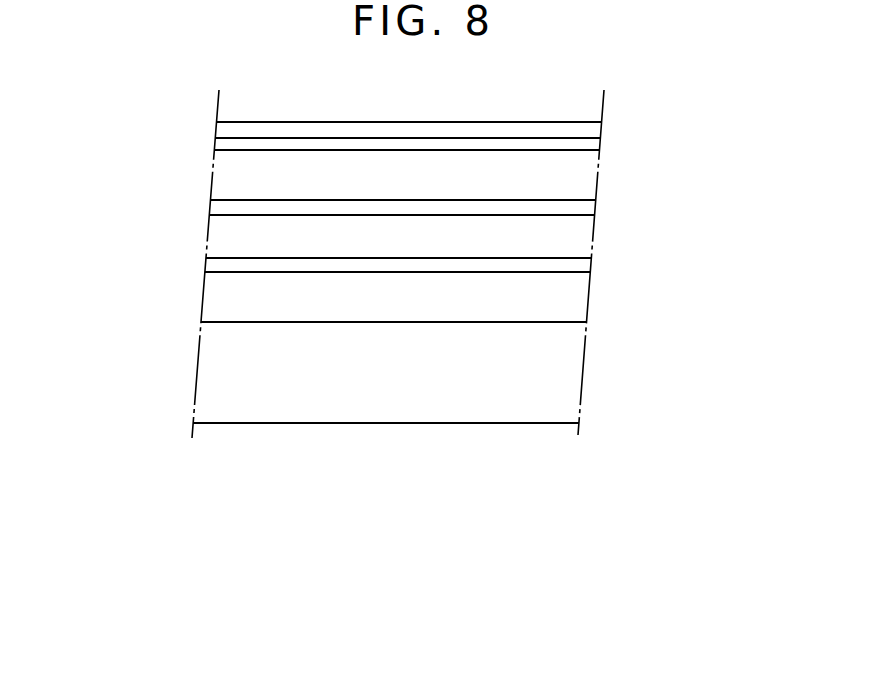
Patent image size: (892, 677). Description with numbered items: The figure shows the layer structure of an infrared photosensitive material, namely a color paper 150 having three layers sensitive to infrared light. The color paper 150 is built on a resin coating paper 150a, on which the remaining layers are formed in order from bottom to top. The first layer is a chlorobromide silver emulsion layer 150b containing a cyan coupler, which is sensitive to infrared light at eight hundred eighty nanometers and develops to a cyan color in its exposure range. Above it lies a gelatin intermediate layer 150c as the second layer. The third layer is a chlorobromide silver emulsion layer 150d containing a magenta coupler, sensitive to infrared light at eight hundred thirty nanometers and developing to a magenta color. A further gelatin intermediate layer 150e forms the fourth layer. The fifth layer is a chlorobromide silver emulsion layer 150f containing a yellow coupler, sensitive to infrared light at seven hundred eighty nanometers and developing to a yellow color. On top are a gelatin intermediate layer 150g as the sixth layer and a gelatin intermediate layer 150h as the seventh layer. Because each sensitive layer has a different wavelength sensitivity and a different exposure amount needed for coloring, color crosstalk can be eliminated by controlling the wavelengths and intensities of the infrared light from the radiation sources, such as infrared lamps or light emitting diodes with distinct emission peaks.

The color paper 150 is at (378, 423).
The resin coating paper 150a is at (573, 375).
The chlorobromide silver emulsion layer containing a cyan coupler 150b is at (575, 297).
The gelatin intermediate layer 150c is at (210, 265).
The chlorobromide silver emulsion layer containing a magenta coupler 150d is at (583, 237).
The gelatin intermediate layer 150e is at (215, 207).
The chlorobromide silver emulsion layer containing a yellow coupler 150f is at (588, 178).
The gelatin intermediate layer 150g is at (218, 143).
The gelatin intermediate layer 150h is at (600, 129).